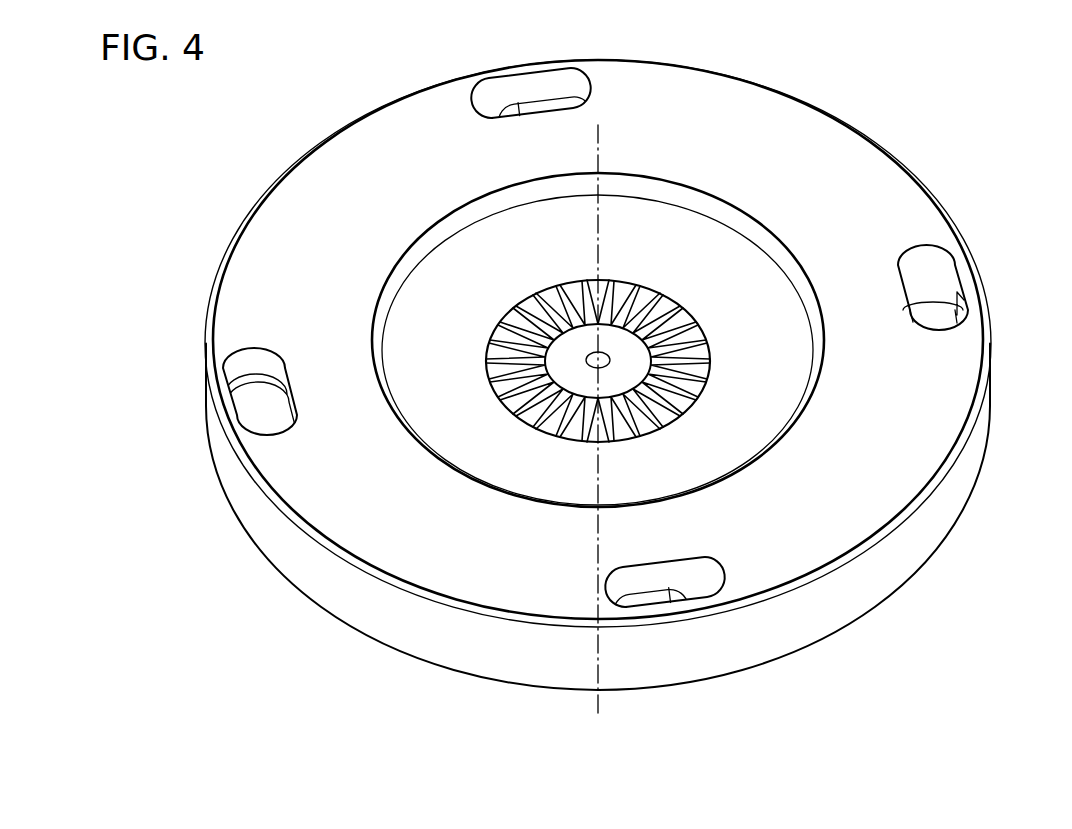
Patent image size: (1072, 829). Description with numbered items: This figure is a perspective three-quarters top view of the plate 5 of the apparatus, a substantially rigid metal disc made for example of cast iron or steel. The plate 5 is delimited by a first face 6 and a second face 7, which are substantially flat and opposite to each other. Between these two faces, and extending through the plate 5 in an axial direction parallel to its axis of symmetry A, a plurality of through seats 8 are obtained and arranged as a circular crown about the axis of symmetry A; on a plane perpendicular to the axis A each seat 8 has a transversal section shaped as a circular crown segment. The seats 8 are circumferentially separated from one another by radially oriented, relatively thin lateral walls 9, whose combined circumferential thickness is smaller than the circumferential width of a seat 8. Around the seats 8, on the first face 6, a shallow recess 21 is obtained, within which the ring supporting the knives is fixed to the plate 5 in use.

The plate 5 is at (883, 197).
The first face 6 is at (940, 445).
The second face 7 is at (902, 588).
The through seats 8 is at (639, 289).
The lateral walls 9 is at (666, 398).
The shallow recess 21 is at (468, 260).
The axis of symmetry A is at (598, 140).